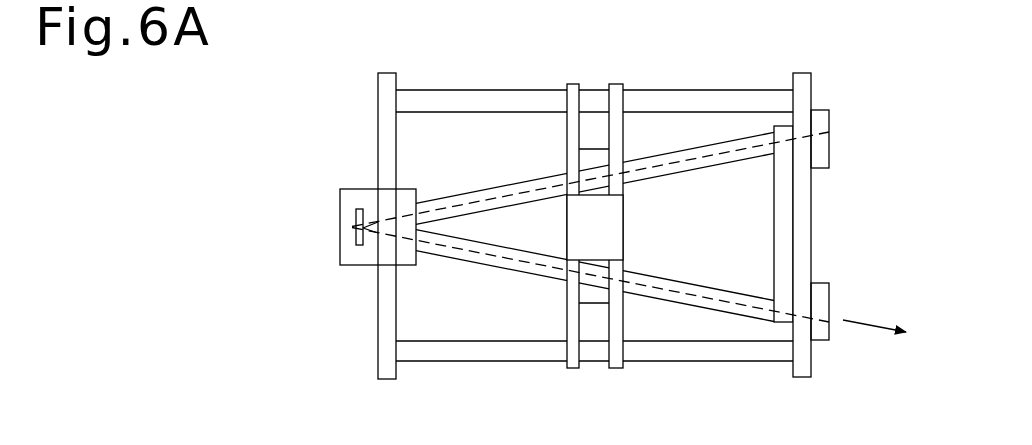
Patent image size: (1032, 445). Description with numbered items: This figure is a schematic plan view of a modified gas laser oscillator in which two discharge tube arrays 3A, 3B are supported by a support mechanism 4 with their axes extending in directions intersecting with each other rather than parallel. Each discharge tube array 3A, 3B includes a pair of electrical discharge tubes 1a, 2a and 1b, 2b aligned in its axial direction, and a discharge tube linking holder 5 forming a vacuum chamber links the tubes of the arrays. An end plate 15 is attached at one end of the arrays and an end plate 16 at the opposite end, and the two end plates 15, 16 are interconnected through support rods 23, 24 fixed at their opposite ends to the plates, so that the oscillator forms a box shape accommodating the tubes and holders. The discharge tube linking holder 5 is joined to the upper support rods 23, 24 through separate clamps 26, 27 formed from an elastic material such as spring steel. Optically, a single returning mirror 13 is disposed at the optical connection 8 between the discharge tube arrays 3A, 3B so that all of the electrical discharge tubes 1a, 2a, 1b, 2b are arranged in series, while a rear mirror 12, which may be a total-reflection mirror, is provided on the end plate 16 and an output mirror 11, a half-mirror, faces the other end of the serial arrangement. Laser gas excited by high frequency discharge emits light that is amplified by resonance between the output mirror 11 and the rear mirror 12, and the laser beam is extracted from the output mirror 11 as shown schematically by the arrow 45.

The support mechanism 4 is at (594, 231).
The end plate 15 is at (386, 95).
The end plate 16 is at (803, 85).
The support rod 23 is at (698, 100).
The support rod 24 is at (708, 357).
The clamp 26 is at (617, 84).
The clamp 27 is at (598, 231).
The discharge tube linking holder 5 is at (571, 226).
The electrical discharge tube 1a is at (473, 200).
The electrical discharge tube 1b is at (478, 263).
The electrical discharge tube 2a is at (656, 176).
The electrical discharge tube 2b is at (696, 286).
The discharge tube array 3A is at (533, 180).
The discharge tube array 3B is at (521, 273).
The rear mirror 12 is at (823, 158).
The output mirror 11 is at (823, 300).
The returning mirror 13 is at (340, 213).
The optical connection 8 is at (342, 238).
The arrow 45 is at (873, 330).